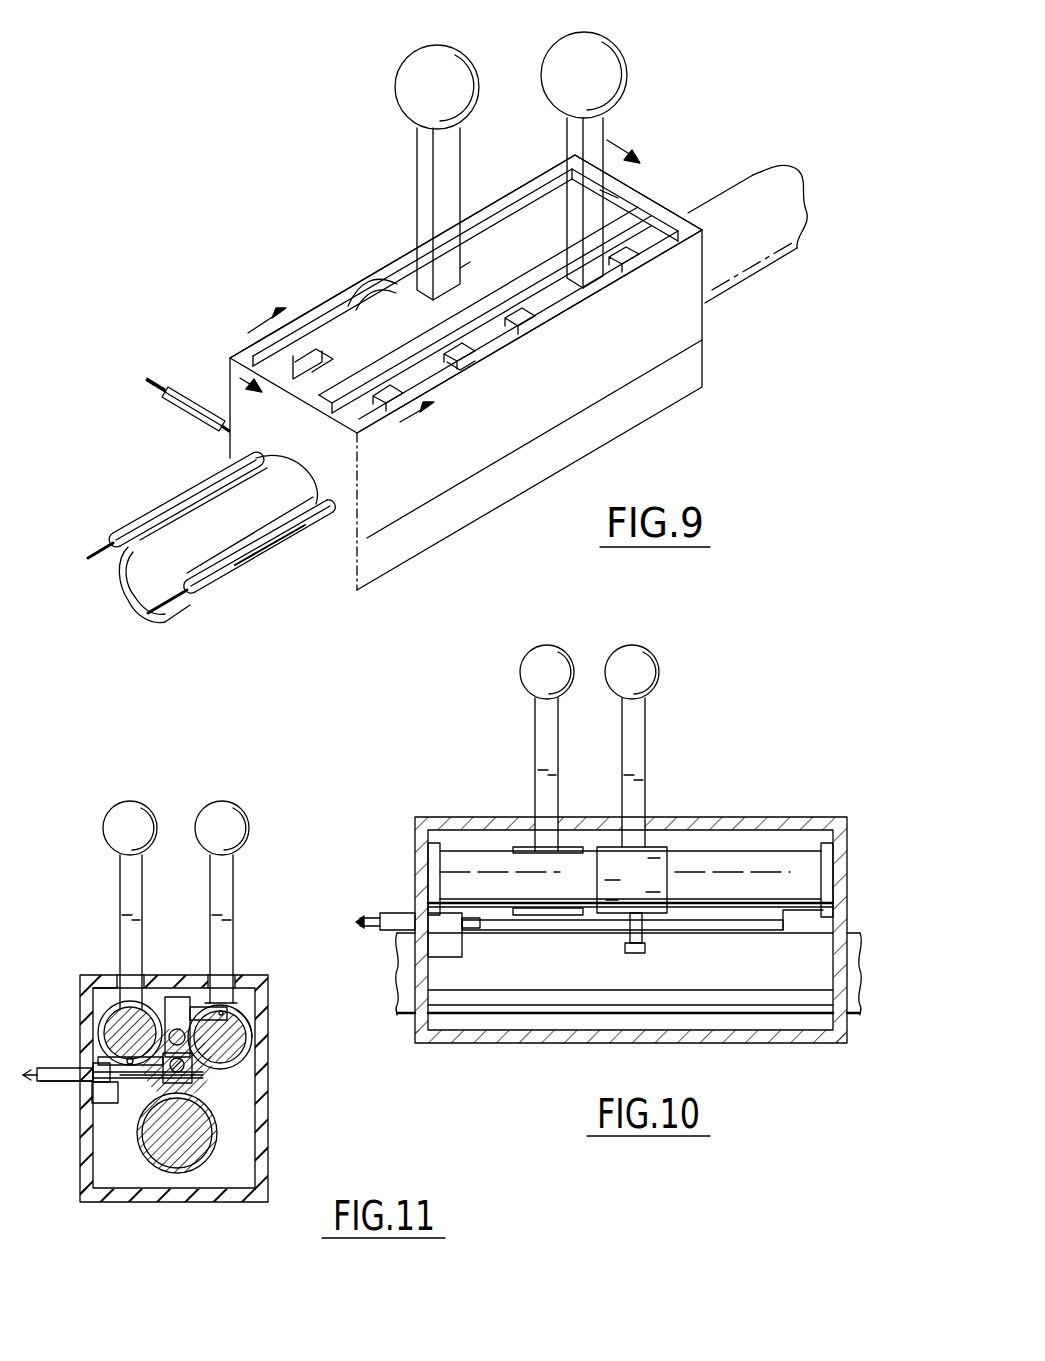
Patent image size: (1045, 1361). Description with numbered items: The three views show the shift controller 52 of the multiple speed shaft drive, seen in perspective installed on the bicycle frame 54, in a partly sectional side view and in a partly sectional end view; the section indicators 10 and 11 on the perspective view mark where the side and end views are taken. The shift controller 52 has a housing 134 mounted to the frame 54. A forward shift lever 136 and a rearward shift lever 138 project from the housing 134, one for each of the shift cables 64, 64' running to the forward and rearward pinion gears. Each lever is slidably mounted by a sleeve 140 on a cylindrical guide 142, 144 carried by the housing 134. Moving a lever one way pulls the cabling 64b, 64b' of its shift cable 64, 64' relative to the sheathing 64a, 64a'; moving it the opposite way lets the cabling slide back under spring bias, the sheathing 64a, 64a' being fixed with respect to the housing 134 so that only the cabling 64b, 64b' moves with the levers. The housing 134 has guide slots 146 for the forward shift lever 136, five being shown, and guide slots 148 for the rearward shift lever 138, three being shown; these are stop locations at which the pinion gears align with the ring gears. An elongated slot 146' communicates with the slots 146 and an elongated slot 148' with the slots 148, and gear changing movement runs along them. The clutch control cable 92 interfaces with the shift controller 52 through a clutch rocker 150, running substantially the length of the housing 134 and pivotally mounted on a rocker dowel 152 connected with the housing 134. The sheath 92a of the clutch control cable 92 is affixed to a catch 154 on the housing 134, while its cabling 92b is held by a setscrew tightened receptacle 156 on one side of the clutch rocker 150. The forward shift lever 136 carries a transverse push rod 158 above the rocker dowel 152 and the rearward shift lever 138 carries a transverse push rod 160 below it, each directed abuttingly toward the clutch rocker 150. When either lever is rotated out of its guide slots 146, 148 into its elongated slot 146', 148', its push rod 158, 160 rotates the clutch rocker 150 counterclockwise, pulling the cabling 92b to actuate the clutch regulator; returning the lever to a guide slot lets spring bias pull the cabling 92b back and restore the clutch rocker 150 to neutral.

In FIG. 9, the shift controller 52 is at (668, 124).
In FIG. 9, the frame 54 is at (182, 600).
In FIG. 10, the frame 54 is at (410, 1013).
In FIG. 11, the frame 54 is at (212, 1147).
In FIG. 9, the shift cable 64 is at (207, 531).
In FIG. 9, the shift cable 64' is at (259, 584).
In FIG. 10, the shift cable 64' is at (385, 889).
In FIG. 9, the sheathing 64a is at (169, 478).
In FIG. 9, the sheathing 64a' is at (260, 610).
In FIG. 9, the cabling 64b is at (66, 500).
In FIG. 9, the cabling 64b' is at (146, 651).
In FIG. 9, the clutch control cable 92 is at (220, 412).
In FIG. 11, the clutch control cable 92 is at (58, 1067).
In FIG. 9, the sheath 92a is at (183, 410).
In FIG. 11, the sheath 92a is at (67, 1083).
In FIG. 9, the cabling 92b is at (150, 378).
In FIG. 11, the cabling 92b is at (135, 1077).
In FIG. 9, the housing 134 is at (705, 322).
In FIG. 10, the housing 134 is at (757, 1043).
In FIG. 11, the housing 134 is at (267, 1077).
In FIG. 9, the forward shift lever 136 is at (597, 135).
In FIG. 10, the forward shift lever 136 is at (535, 748).
In FIG. 11, the forward shift lever 136 is at (210, 870).
In FIG. 9, the rearward shift lever 138 is at (418, 150).
In FIG. 10, the rearward shift lever 138 is at (645, 775).
In FIG. 11, the rearward shift lever 138 is at (122, 872).
In FIG. 10, the sleeve 140 is at (530, 846).
In FIG. 11, the sleeve 140 is at (95, 985).
In FIG. 10, the cylindrical guide 142 is at (733, 855).
In FIG. 11, the cylindrical guide 142 is at (250, 1050).
In FIG. 11, the cylindrical guide 144 is at (100, 1040).
In FIG. 9, the guide slots 146 is at (515, 376).
In FIG. 9, the elongated slot 146' is at (513, 369).
In FIG. 11, the elongated slot 146' is at (192, 925).
In FIG. 9, the guide slots 148 is at (429, 243).
In FIG. 9, the elongated slot 148' is at (348, 268).
In FIG. 11, the elongated slot 148' is at (99, 925).
In FIG. 10, the clutch rocker 150 is at (730, 930).
In FIG. 11, the clutch rocker 150 is at (172, 997).
In FIG. 11, the rocker dowel 152 is at (213, 1003).
In FIG. 11, the catch 154 is at (103, 1103).
In FIG. 11, the setscrew tightened receptacle 156 is at (188, 1067).
In FIG. 11, the push rod 158 is at (212, 1013).
In FIG. 11, the push rod 160 is at (152, 1087).
In FIG. 9, the section line 10- 10 is at (458, 282).
In FIG. 9, the section line 11- 11 is at (346, 367).